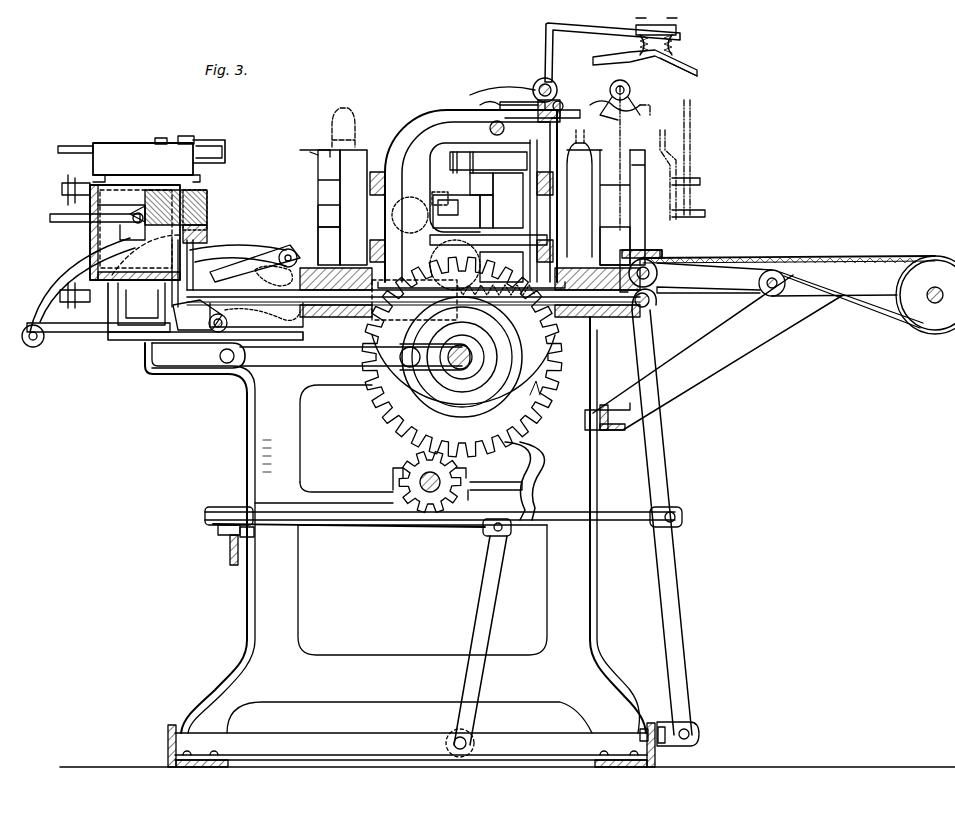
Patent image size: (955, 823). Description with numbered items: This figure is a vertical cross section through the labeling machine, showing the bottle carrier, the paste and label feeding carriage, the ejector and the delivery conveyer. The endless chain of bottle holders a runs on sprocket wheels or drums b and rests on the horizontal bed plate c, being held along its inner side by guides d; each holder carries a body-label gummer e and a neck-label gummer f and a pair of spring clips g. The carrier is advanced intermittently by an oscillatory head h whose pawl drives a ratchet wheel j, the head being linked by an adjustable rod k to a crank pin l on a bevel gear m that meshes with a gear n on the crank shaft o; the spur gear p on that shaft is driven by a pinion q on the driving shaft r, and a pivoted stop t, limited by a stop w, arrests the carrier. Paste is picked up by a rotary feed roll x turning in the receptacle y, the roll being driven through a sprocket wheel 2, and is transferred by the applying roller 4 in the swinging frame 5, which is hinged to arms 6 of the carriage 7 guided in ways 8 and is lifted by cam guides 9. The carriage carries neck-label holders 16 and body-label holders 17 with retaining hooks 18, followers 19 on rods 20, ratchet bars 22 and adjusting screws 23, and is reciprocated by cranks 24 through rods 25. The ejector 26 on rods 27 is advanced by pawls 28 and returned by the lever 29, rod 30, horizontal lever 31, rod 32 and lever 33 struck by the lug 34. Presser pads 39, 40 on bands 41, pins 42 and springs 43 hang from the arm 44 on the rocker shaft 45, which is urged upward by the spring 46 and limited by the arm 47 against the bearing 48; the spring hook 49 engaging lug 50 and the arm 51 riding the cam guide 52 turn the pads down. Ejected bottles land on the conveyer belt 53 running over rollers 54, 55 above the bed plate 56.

The sprocket wheel 2 is at (222, 265).
The paste delivering and applying roller 4 is at (286, 250).
The vertically swinging frame 5 is at (60, 274).
The rearwardly extending arms 6 is at (72, 333).
The reciprocative carriage 7 is at (127, 340).
The parallel ways 8 is at (270, 345).
The cam guides 9 is at (128, 283).
The neck-label holders 16 is at (146, 162).
The body-label holders 17 is at (135, 232).
The label retaining hooks 18 is at (226, 155).
The follower 19 is at (146, 204).
The parallel rods 20 is at (96, 138).
The ratchet bar 22 is at (68, 146).
The screws 23 is at (62, 188).
The cranks 24 is at (454, 357).
The rods 25 is at (355, 357).
The reciprocative ejector 26 is at (467, 199).
The parallel rods 27 is at (413, 308).
The hooks or pawls 28 is at (172, 311).
The lever 29 is at (672, 470).
The rod 30 is at (567, 520).
The horizontal lever 31 is at (205, 520).
The rod 32 is at (452, 526).
The lever 33 is at (500, 595).
The lug 34 is at (488, 238).
The presser pad 39 is at (612, 82).
The presser pad 40 is at (690, 72).
The metal plates or bands 41 is at (635, 60).
The pins 42 is at (656, 32).
The springs 43 is at (656, 44).
The forked and elbow-shaped arm 44 is at (548, 34).
The rocker shaft 45 is at (534, 85).
The spring 46 is at (550, 84).
The arm 47 is at (492, 86).
The horizontal bearing 48 is at (490, 103).
The spring hook 49 is at (509, 129).
The lug 50 is at (530, 104).
The arm 51 is at (564, 106).
The stationary cam guide 52 is at (622, 112).
The endless conveyer belt 53 is at (780, 258).
The roller 54 is at (653, 283).
The roller 55 is at (925, 295).
The horizontal bed plate 56 is at (876, 270).
The bottle holders a is at (474, 207).
The sprocket wheels or drums b is at (400, 248).
The bed plate c is at (296, 200).
The guides d is at (545, 195).
The gummer e is at (633, 212).
The gummer f is at (310, 150).
The spring clips g is at (329, 216).
The oscillatory head h is at (496, 211).
The ratchet wheel j is at (485, 184).
The adjustable rod k is at (432, 200).
The crank pin l is at (455, 265).
The bevel gear m is at (490, 252).
The bevel gear n is at (462, 357).
The crank shaft o is at (458, 340).
The spur gear p is at (372, 418).
The pinion q is at (412, 468).
The driving shaft r is at (468, 475).
The stop t is at (456, 211).
The stop w is at (413, 220).
The rotary feed roll x is at (262, 274).
The paste receptacle y is at (218, 272).